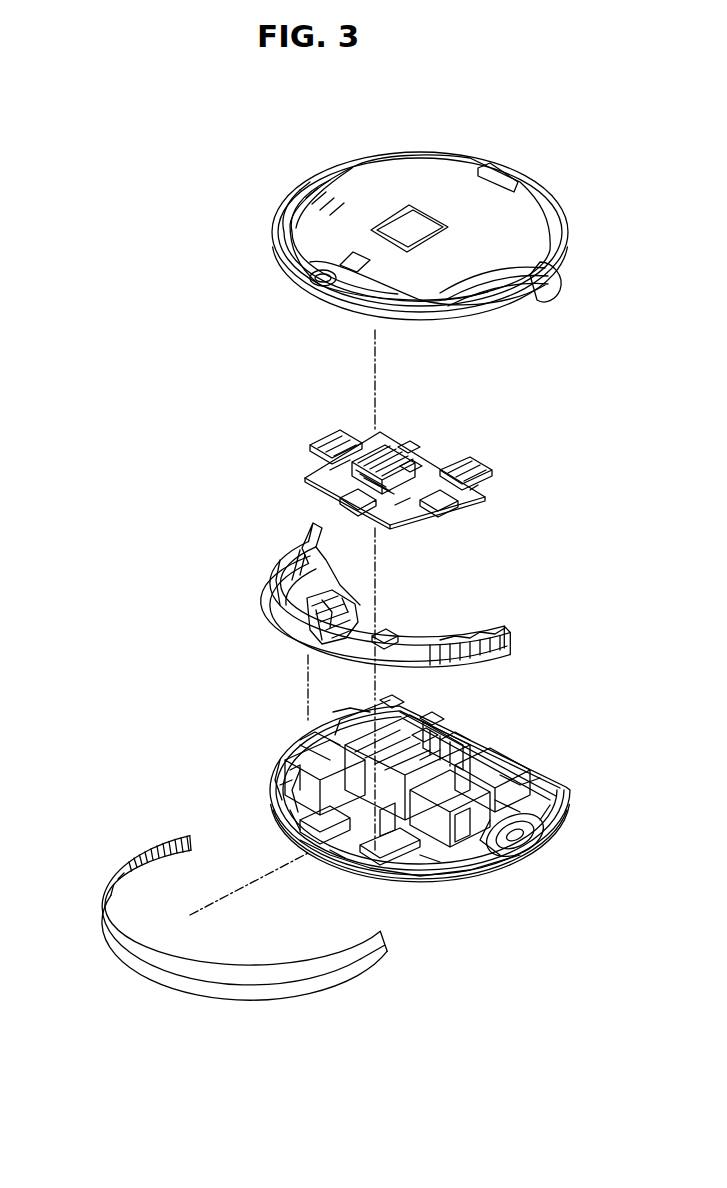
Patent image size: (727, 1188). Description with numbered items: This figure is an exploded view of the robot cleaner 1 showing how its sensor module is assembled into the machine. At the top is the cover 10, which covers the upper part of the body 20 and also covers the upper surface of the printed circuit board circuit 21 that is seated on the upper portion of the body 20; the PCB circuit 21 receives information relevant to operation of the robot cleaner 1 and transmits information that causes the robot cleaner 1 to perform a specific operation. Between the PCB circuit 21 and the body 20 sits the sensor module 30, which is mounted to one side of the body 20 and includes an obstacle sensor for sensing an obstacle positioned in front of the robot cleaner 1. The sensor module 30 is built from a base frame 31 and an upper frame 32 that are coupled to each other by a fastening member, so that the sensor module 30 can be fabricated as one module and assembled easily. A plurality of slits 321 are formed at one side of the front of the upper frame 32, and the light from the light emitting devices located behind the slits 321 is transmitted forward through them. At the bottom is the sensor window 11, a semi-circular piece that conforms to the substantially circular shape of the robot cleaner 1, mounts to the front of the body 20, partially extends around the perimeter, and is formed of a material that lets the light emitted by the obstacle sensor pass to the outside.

The robot cleaner 1 is at (210, 140).
The cover 10 is at (390, 168).
The sensor window 11 is at (106, 866).
The body 20 is at (280, 748).
The printed circuit board (PCB) circuit 21 is at (440, 439).
The sensor module 30 is at (270, 546).
The base frame 31 is at (420, 664).
The upper frame 32 is at (386, 642).
The slits 321 is at (326, 652).